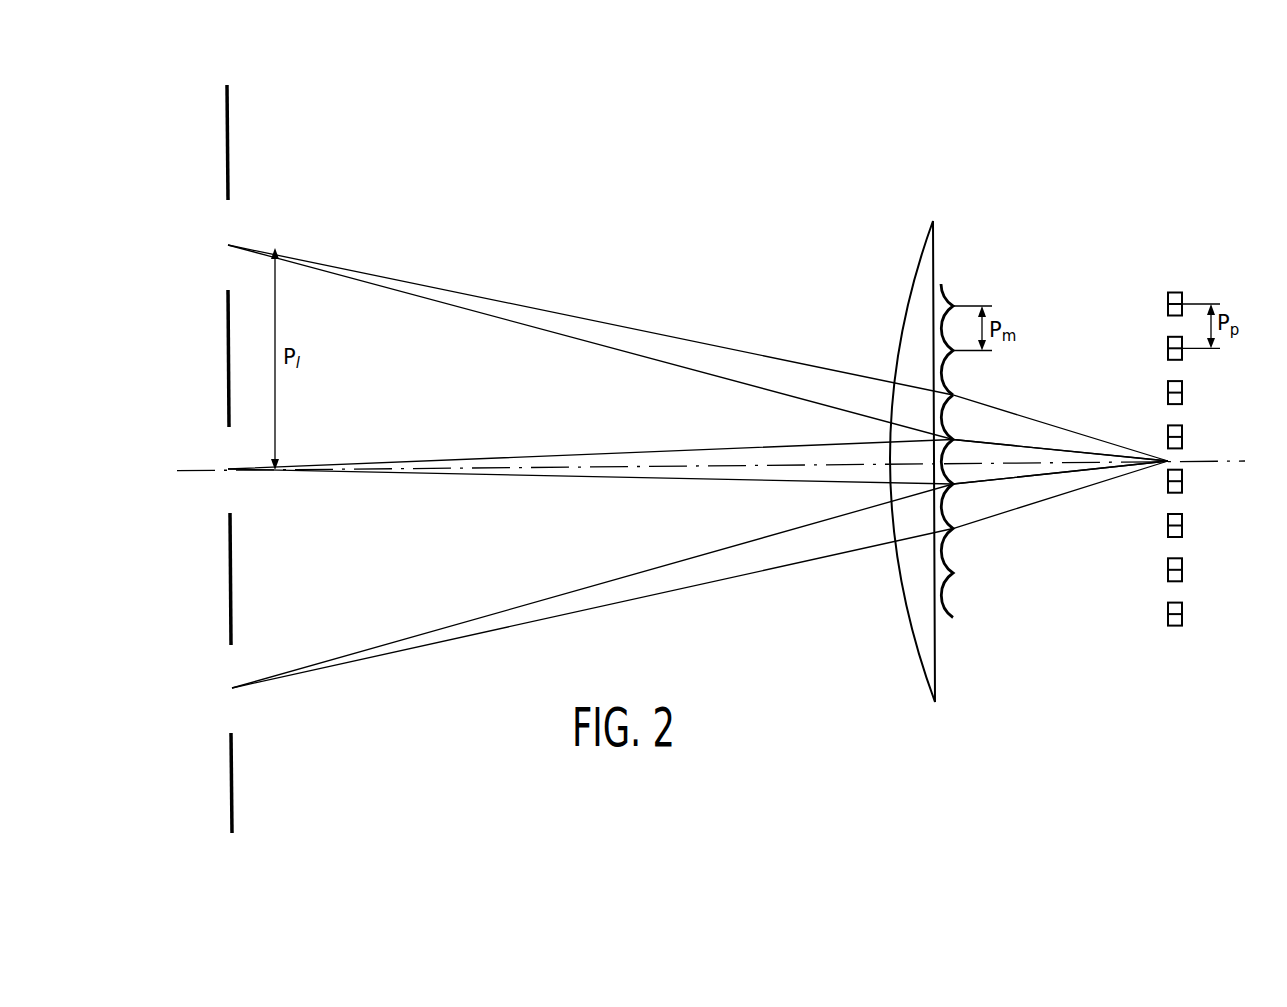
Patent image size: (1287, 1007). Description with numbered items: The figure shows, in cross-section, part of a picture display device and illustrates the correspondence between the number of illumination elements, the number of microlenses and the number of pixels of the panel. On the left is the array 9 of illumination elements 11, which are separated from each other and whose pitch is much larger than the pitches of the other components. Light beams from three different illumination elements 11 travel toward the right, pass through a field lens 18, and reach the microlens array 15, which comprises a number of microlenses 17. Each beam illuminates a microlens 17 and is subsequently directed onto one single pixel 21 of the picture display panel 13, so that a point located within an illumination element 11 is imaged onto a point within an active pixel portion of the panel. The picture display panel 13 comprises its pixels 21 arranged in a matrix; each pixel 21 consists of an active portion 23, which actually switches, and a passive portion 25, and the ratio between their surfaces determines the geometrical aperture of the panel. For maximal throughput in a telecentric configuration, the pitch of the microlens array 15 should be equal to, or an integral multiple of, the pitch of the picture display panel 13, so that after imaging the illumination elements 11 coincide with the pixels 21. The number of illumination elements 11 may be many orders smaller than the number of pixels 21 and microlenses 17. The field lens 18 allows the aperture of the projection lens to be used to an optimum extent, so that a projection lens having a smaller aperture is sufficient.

The array of illumination elements 9 is at (207, 498).
The illumination elements 11 is at (228, 262).
The picture display panel 13 is at (1148, 518).
The microlens array 15 is at (925, 500).
The microlenses 17 is at (938, 373).
The field lens 18 is at (922, 640).
The pixels 21 is at (1148, 503).
The active portion 23 is at (1175, 507).
The passive portion 25 is at (1168, 487).